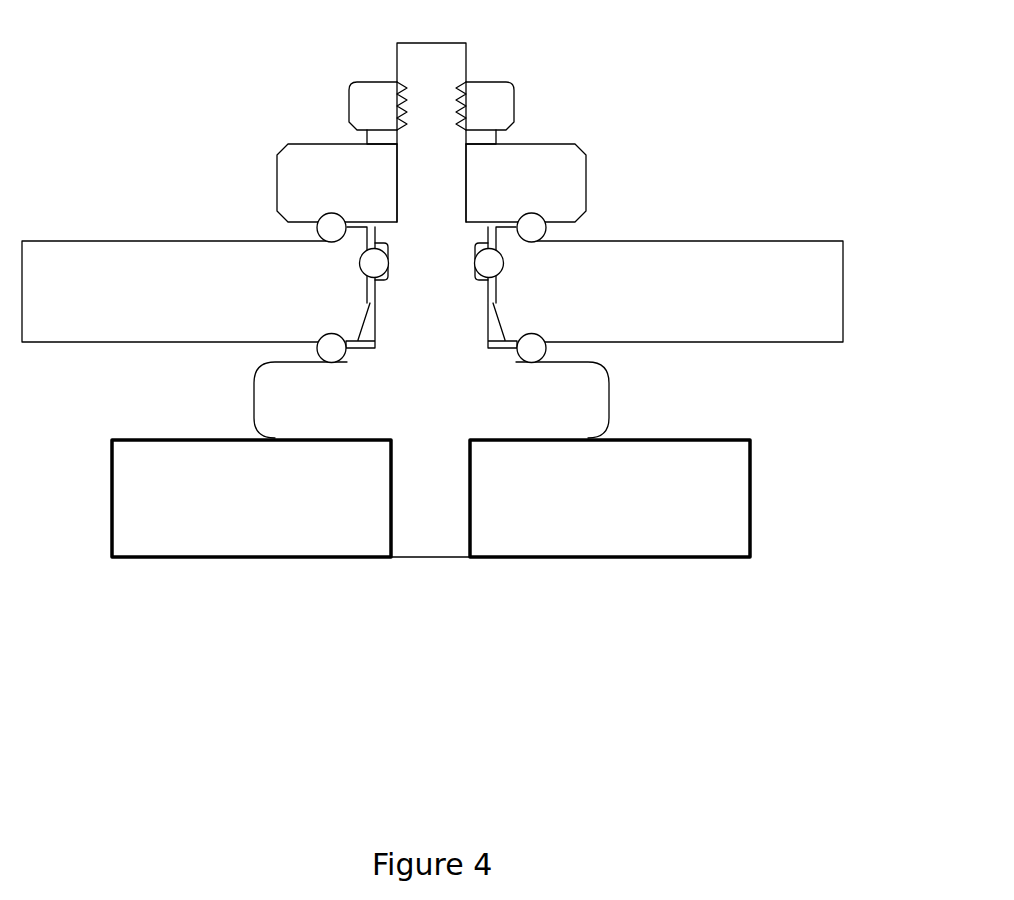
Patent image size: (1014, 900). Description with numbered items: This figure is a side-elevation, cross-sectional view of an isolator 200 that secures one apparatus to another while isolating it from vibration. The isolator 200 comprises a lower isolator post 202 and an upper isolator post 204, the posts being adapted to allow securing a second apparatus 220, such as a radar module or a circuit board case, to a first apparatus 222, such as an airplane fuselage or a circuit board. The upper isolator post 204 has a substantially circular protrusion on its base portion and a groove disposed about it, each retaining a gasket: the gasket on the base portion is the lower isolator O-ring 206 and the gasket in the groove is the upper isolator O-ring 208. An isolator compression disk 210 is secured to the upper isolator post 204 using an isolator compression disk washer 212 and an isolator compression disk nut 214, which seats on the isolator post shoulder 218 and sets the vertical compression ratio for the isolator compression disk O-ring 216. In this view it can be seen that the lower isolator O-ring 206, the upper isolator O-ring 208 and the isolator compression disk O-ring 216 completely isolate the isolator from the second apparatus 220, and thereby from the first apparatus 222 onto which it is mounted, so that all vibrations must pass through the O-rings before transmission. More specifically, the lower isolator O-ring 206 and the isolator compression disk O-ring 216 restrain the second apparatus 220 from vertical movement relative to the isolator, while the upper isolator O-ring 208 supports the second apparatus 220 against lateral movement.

The isolator 200 is at (626, 404).
The lower isolator post 202 is at (406, 569).
The upper isolator post 204 is at (478, 35).
The lower isolator O-ring 206 is at (560, 352).
The upper isolator O-ring 208 is at (513, 264).
The isolator compression disk 210 is at (600, 174).
The isolator compression disk washer 212 is at (510, 137).
The isolator compression disk nut 214 is at (528, 105).
The isolator compression disk O-ring 216 is at (561, 228).
The isolator post shoulder 218 is at (376, 208).
The second apparatus 220 is at (859, 287).
The first apparatus 222 is at (235, 572).